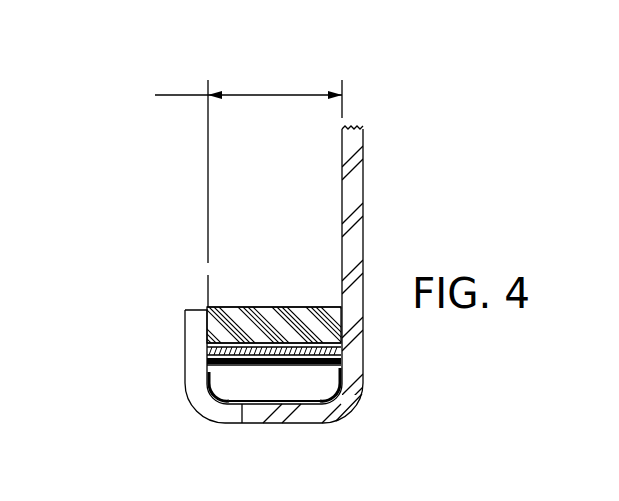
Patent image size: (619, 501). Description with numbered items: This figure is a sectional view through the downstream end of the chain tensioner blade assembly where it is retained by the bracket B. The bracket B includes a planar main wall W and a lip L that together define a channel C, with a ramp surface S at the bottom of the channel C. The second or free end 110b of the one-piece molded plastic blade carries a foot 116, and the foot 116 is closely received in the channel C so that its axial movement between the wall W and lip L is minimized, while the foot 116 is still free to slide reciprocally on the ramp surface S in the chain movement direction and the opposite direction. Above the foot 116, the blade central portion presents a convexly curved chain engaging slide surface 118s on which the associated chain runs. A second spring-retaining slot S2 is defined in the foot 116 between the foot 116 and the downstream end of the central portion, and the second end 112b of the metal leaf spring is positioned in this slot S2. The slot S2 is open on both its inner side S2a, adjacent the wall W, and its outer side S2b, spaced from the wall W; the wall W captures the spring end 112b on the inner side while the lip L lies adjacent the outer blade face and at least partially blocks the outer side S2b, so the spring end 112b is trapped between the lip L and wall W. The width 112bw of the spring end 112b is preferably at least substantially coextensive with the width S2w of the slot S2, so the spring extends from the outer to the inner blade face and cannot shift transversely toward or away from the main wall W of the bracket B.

The width of spring end 112bw is at (177, 97).
The width of second slot S2w is at (223, 193).
The main wall W is at (342, 160).
The bracket B is at (363, 131).
The chain engaging slide surface 118s is at (264, 315).
The second end of blade 110b is at (228, 318).
The second spring-retaining slot S2 is at (298, 318).
The outer side of second slot S2b is at (210, 307).
The lip L is at (190, 337).
The second end of spring 112b is at (252, 366).
The foot 116 is at (230, 393).
The inner side of second slot S2a is at (334, 329).
The ramp surface S is at (276, 392).
The channel C is at (314, 390).